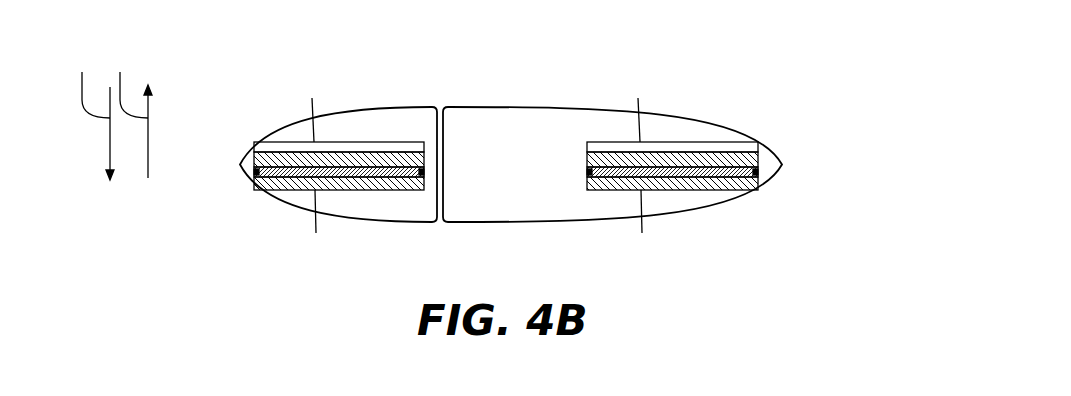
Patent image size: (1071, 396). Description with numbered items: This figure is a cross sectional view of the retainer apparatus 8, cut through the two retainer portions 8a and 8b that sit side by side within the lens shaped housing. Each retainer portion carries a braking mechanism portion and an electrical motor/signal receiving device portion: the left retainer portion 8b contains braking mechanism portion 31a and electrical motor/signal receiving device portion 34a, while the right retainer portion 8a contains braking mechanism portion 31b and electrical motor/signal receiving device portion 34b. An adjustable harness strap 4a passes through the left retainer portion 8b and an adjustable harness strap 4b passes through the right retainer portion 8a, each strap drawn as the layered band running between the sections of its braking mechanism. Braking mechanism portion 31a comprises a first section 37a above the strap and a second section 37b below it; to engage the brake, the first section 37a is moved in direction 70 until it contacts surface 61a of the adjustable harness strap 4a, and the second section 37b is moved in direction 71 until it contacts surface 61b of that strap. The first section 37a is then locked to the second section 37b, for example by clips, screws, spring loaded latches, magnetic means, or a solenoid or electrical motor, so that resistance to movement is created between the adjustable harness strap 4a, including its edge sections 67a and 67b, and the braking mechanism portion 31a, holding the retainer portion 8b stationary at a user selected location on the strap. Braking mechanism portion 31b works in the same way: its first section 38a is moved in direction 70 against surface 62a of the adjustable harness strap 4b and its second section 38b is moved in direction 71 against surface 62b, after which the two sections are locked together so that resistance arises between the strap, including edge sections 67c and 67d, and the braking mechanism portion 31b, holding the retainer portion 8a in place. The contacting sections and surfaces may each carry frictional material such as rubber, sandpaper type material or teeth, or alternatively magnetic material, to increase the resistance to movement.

The retainer apparatus 8 is at (527, 67).
The retainer portion 8a is at (640, 170).
The retainer portion 8b is at (310, 170).
The braking mechanism portion 31a is at (280, 118).
The braking mechanism portion 31b is at (740, 118).
The electrical motor/signal receiving device portion 34a is at (375, 146).
The electrical motor/signal receiving device portion 34b is at (702, 146).
The first section 37a is at (254, 150).
The second section 37b is at (256, 190).
The first section 38a is at (756, 150).
The second section 38b is at (757, 190).
The adjustable harness strap 4a is at (256, 181).
The adjustable harness strap 4b is at (757, 176).
The surface 61a is at (315, 190).
The surface 61b is at (312, 227).
The surface 62a is at (641, 190).
The surface 62b is at (638, 227).
The edge section 67a is at (256, 170).
The edge section 67b is at (421, 171).
The edge section 67c is at (589, 171).
The edge section 67d is at (757, 170).
The direction 70 is at (92, 114).
The direction 71 is at (129, 113).